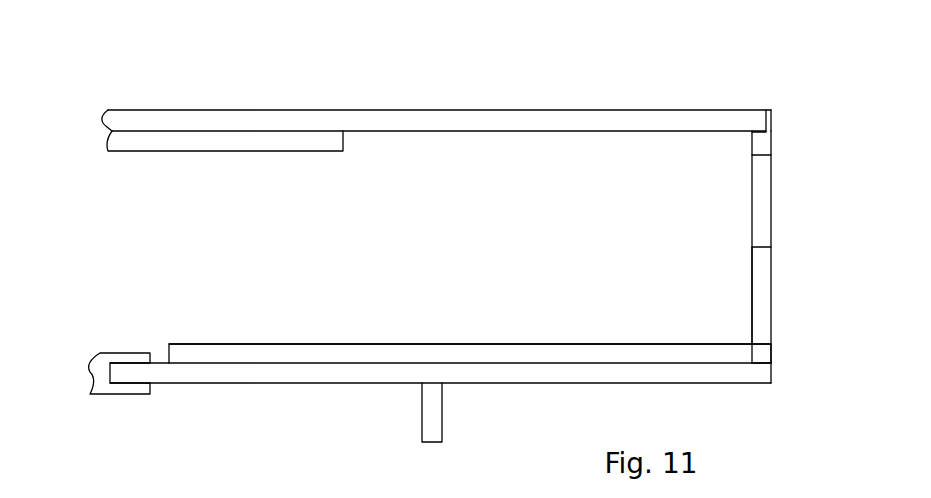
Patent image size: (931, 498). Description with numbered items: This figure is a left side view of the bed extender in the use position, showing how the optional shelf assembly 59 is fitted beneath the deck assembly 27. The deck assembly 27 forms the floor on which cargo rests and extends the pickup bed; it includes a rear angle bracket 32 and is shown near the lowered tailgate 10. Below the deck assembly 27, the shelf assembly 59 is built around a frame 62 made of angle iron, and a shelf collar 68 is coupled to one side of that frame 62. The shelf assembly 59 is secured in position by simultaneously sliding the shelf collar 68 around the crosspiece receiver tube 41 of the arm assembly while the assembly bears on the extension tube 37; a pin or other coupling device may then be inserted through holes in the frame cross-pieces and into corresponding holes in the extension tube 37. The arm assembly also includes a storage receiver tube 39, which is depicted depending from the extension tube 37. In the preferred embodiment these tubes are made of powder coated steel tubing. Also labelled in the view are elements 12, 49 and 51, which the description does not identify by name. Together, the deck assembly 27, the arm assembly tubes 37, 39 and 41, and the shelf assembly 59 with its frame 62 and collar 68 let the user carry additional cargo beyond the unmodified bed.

The tailgate 10 is at (180, 150).
The fastener clip 12 is at (100, 353).
The deck assembly 27 is at (352, 120).
The rear angle bracket 32 is at (773, 110).
The extension tube 37 is at (247, 372).
The storage receiver tube 39 is at (425, 418).
The crosspiece receiver tube 41 is at (763, 281).
The vertical wall 49 is at (766, 208).
The upper block 51 is at (766, 150).
The shelf assembly 59 is at (296, 355).
The frame 62 is at (508, 355).
The shelf collar 68 is at (760, 354).